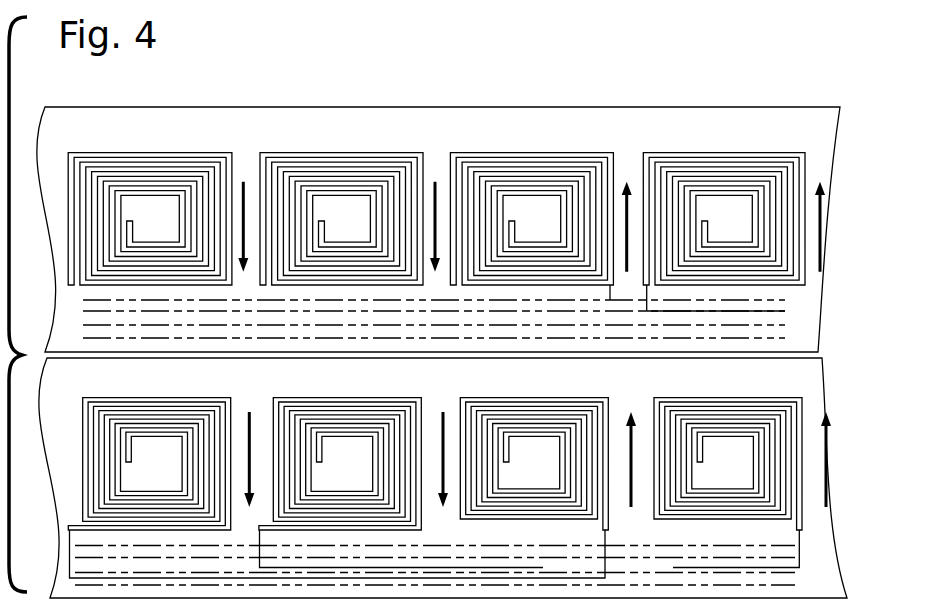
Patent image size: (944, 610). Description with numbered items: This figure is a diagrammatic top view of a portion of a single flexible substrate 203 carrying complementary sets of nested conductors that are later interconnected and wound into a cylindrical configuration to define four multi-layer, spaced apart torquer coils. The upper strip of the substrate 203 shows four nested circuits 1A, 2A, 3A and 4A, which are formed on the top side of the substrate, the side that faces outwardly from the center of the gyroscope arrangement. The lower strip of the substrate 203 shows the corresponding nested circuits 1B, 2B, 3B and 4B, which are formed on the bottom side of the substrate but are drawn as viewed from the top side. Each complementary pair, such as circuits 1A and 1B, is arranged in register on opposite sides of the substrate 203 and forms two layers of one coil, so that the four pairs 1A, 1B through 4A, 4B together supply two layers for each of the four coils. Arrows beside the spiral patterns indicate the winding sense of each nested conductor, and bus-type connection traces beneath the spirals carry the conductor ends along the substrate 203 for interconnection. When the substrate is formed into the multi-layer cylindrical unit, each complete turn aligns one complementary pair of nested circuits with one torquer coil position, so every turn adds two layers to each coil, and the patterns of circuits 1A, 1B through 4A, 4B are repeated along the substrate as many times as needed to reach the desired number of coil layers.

The substrate 203 is at (781, 110).
The nested circuit 1A is at (150, 206).
The nested circuit 2A is at (341, 206).
The nested circuit 3A is at (531, 213).
The nested circuit 4A is at (724, 219).
The nested circuit 1B is at (336, 475).
The nested circuit 2B is at (401, 470).
The nested circuit 3B is at (534, 451).
The nested circuit 4B is at (728, 470).